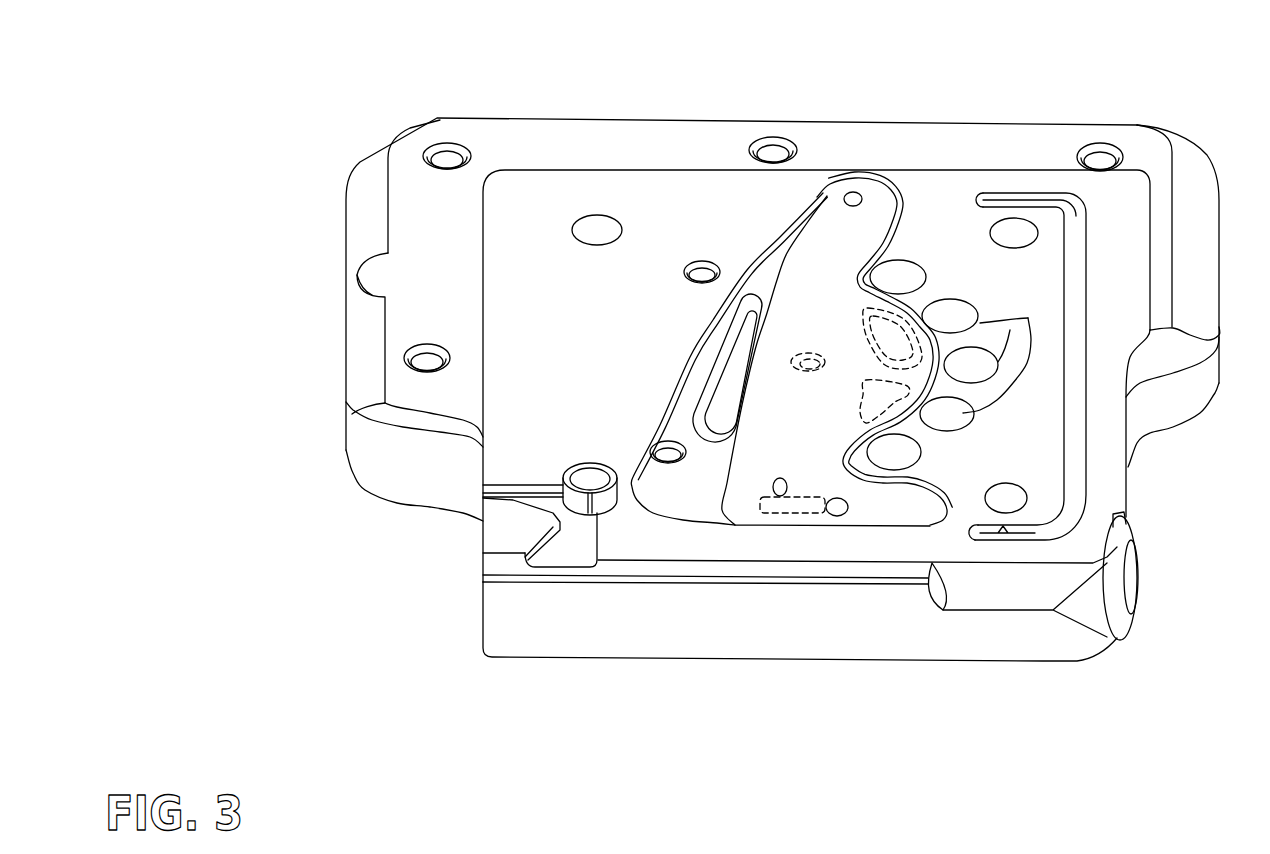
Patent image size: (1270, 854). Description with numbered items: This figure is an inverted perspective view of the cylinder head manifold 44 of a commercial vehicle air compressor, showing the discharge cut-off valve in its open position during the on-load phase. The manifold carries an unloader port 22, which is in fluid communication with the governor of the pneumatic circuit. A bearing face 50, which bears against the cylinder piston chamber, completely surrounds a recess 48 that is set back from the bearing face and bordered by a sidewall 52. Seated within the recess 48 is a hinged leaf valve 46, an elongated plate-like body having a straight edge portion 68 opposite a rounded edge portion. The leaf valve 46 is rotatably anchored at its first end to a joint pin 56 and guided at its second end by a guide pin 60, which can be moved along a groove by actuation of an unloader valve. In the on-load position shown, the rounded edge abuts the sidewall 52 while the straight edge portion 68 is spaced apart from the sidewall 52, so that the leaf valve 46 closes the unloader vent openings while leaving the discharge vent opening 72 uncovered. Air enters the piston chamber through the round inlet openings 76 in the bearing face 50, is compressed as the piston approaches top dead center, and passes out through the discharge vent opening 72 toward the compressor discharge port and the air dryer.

The unloader port 22 is at (1130, 552).
The cylinder head manifold 44 is at (1048, 118).
The hinged leaf valve 46 is at (796, 276).
The recess 48 is at (688, 509).
The bearing face 50 is at (568, 298).
The sidewall 52 is at (690, 368).
The joint pin 56 is at (860, 194).
The guide pin 60 is at (837, 516).
The straight edge portion 68 is at (730, 459).
The discharge vent opening 72 is at (724, 361).
The round inlet openings 76 is at (1028, 318).